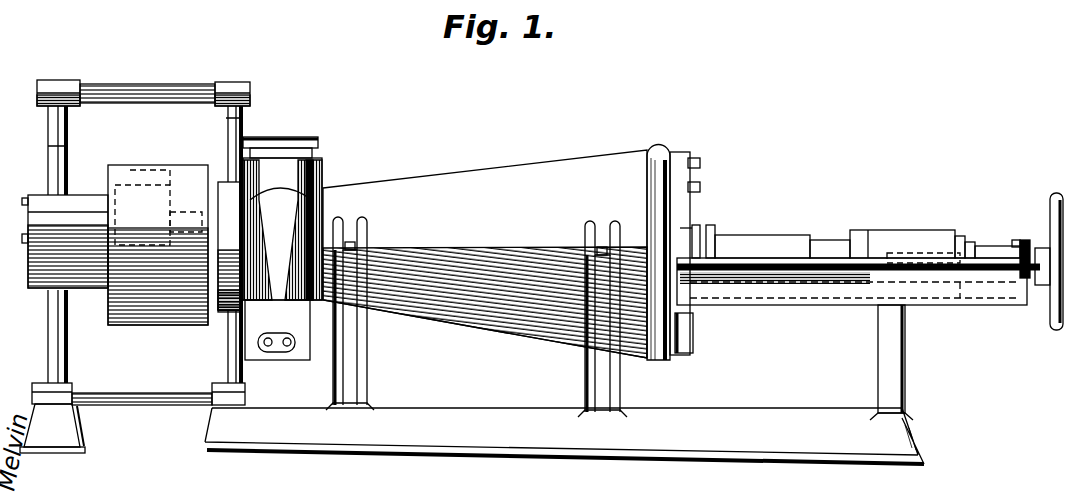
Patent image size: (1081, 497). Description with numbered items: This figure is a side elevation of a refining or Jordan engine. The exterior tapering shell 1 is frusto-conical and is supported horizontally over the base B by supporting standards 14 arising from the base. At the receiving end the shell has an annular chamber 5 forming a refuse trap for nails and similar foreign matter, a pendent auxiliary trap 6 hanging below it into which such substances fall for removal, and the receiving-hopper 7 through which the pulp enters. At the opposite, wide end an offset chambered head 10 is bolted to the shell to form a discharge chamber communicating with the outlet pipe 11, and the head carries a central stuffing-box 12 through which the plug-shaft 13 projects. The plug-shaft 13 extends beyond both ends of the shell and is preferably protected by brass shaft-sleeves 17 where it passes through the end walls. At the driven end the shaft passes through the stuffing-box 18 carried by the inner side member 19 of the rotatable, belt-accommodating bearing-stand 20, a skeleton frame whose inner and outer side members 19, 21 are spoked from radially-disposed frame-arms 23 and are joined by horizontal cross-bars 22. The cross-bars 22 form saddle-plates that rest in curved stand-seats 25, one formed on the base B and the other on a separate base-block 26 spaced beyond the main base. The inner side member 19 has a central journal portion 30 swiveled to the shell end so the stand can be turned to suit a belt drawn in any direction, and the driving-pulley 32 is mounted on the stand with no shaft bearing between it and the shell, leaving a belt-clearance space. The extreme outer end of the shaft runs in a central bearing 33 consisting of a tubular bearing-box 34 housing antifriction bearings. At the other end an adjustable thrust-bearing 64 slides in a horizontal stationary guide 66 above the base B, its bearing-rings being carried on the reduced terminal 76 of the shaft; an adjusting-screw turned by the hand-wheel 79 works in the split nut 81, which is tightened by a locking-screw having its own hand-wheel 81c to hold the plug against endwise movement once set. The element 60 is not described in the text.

The exterior tapering shell 1 is at (446, 181).
The annular chamber 5 is at (282, 224).
The pendent auxiliary trap 6 is at (277, 330).
The receiving-hopper 7 is at (286, 146).
The offset chambered head 10 is at (676, 200).
The outlet pipe 11 is at (706, 340).
The central stuffing-box 12 is at (712, 233).
The plug-shaft 13 is at (830, 250).
The supporting standards 14 is at (878, 377).
The shaft-sleeves 17 is at (752, 245).
The stuffing-box 18 is at (220, 182).
The inner side member 19 is at (219, 244).
The bearing-stand 20 is at (183, 72).
The outer side member 21 is at (41, 244).
The cross-bars 22 is at (143, 394).
The frame-arms 23 is at (68, 146).
The stand-seats 25 is at (70, 400).
The base-block 26 is at (52, 428).
The central journal portion 30 is at (219, 322).
The driving-pulley 32 is at (158, 231).
The central bearing 33 is at (20, 208).
The tubular bearing-box 34 is at (68, 241).
The hub 60 is at (1040, 246).
The adjustable thrust-bearing 64 is at (902, 230).
The horizontal stationary guide 66 is at (815, 303).
The reduced terminal 76 is at (987, 237).
The hand-wheel 79 is at (1048, 252).
The nut 81 is at (1018, 250).
The hand-wheel 81c is at (1019, 238).
The base B is at (564, 436).